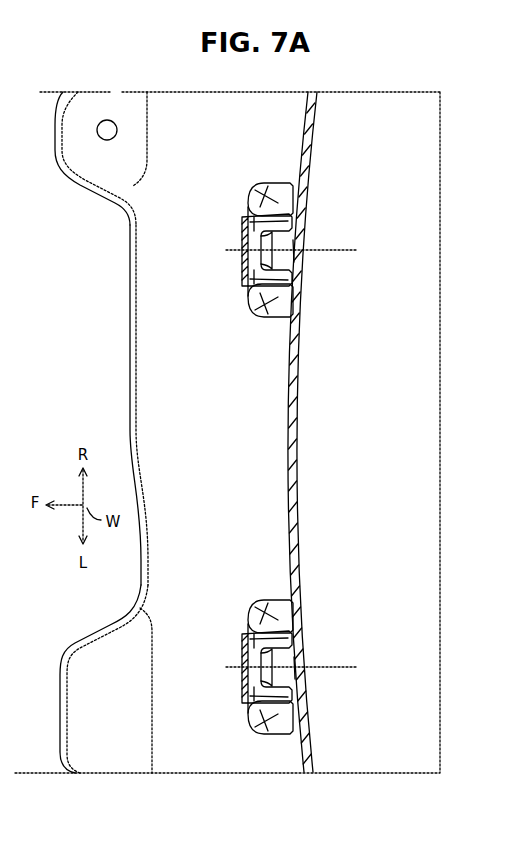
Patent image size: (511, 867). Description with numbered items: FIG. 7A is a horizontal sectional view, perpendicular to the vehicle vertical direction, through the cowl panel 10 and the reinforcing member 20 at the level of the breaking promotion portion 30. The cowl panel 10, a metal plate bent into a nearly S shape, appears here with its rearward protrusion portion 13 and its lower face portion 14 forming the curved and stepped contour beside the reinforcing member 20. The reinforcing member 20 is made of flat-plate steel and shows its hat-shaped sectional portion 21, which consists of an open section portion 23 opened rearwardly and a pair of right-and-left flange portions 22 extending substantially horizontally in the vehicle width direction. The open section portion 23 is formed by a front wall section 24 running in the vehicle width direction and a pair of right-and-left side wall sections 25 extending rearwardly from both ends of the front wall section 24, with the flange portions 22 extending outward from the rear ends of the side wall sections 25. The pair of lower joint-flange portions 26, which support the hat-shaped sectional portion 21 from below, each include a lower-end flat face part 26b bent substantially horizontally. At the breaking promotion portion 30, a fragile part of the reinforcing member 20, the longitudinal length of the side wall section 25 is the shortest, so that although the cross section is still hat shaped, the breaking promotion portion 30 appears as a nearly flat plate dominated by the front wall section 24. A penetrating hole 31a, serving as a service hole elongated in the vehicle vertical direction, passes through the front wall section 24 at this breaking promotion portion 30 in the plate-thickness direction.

The cowl panel 10 is at (124, 408).
The rearward protrusion portion 13 is at (298, 398).
The lower face portion 14 is at (158, 343).
The reinforcing member 20 is at (204, 237).
The hat-shaped sectional portion 21 is at (238, 250).
The flange portions 22 is at (246, 213).
The open section portion 23 is at (238, 264).
The front wall section 24 is at (242, 232).
The side wall sections 25 is at (244, 222).
The lower joint-flange portions 26 is at (283, 182).
The lower-end flat face part 26b is at (266, 192).
The breaking promotion portion 30 is at (241, 296).
The penetrating hole 31a is at (296, 250).